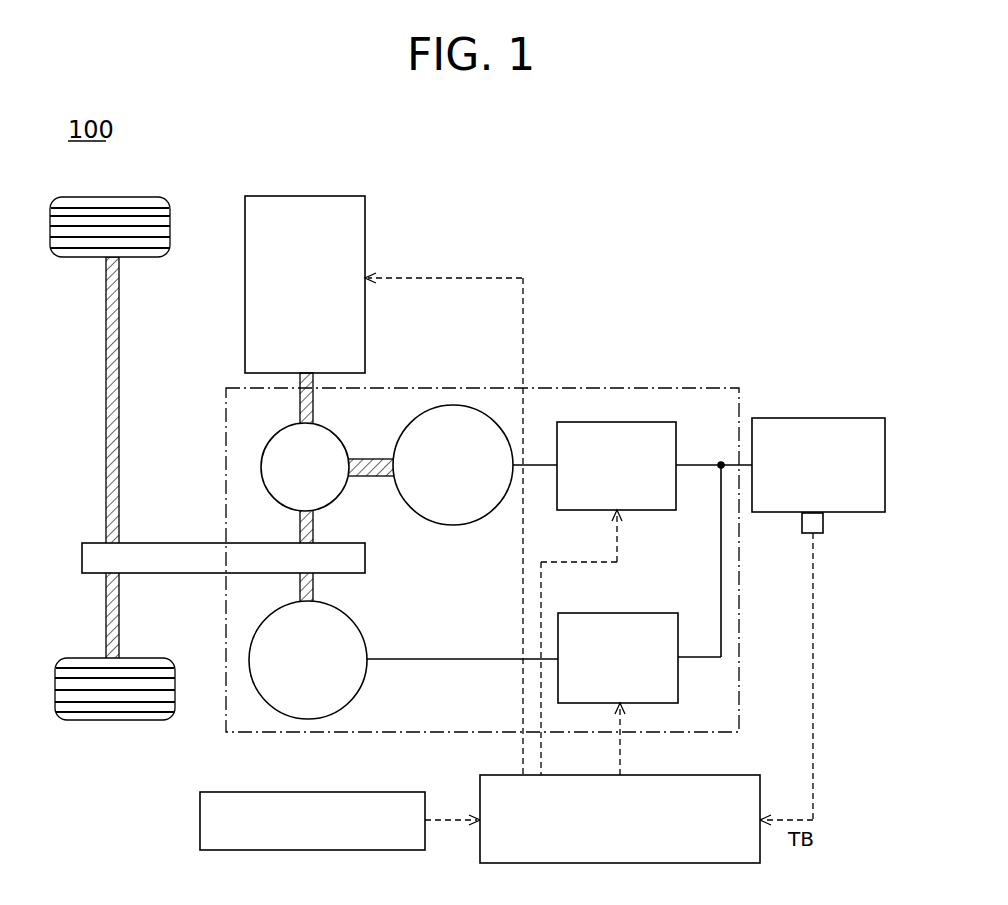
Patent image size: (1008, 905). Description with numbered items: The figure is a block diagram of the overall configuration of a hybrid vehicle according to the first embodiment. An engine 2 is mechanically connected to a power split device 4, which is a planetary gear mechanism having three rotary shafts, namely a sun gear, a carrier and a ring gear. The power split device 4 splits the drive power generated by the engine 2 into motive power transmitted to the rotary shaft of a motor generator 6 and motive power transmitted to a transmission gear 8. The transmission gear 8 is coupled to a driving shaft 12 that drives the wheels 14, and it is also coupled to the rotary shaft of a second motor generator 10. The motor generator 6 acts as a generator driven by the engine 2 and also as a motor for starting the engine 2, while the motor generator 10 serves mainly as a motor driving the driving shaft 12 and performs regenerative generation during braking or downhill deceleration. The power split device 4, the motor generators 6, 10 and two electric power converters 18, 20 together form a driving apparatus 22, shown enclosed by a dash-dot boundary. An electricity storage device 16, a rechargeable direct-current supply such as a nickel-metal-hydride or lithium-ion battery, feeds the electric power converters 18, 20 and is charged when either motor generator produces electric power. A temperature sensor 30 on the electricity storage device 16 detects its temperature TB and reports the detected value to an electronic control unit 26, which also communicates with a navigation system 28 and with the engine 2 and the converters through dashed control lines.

The engine 2 is at (322, 196).
The power split device 4 is at (277, 440).
The motor generator 6 is at (458, 525).
The transmission gear 8 is at (168, 543).
The motor generator 10 is at (350, 614).
The driving shaft 12 is at (119, 366).
The wheels 14 is at (128, 197).
The electricity storage device 16 is at (830, 418).
The electric power converter 18 is at (633, 422).
The electric power converter 20 is at (638, 613).
The driving apparatus 22 is at (580, 388).
The electronic control unit (ECU) 26 is at (713, 775).
The navigation system 28 is at (380, 792).
The temperature sensor 30 is at (823, 524).